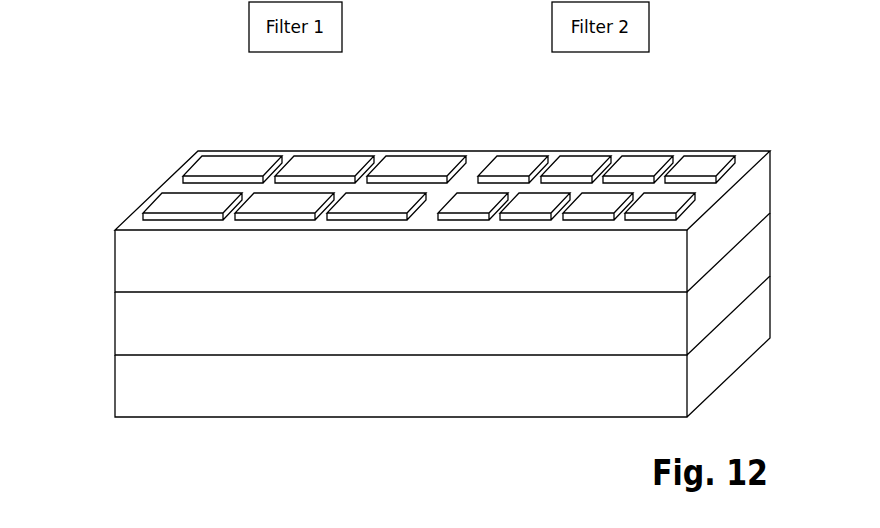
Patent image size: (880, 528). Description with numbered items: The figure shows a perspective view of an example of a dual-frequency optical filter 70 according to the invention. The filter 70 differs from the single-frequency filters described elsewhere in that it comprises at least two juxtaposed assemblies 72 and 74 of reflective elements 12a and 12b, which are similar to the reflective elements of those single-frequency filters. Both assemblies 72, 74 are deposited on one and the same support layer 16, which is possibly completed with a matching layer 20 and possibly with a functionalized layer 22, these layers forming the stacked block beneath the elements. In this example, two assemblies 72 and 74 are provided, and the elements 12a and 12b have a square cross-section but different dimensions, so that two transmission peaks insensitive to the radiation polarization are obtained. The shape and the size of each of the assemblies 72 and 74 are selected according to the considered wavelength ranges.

The reflective elements 12a is at (200, 150).
The reflective elements 12b is at (500, 150).
The support layer 16 is at (115, 272).
The matching layer 20 is at (115, 333).
The functionalized layer 22 is at (115, 396).
The filter 70 is at (401, 230).
The assembly 72 is at (304, 138).
The assembly 74 is at (586, 158).